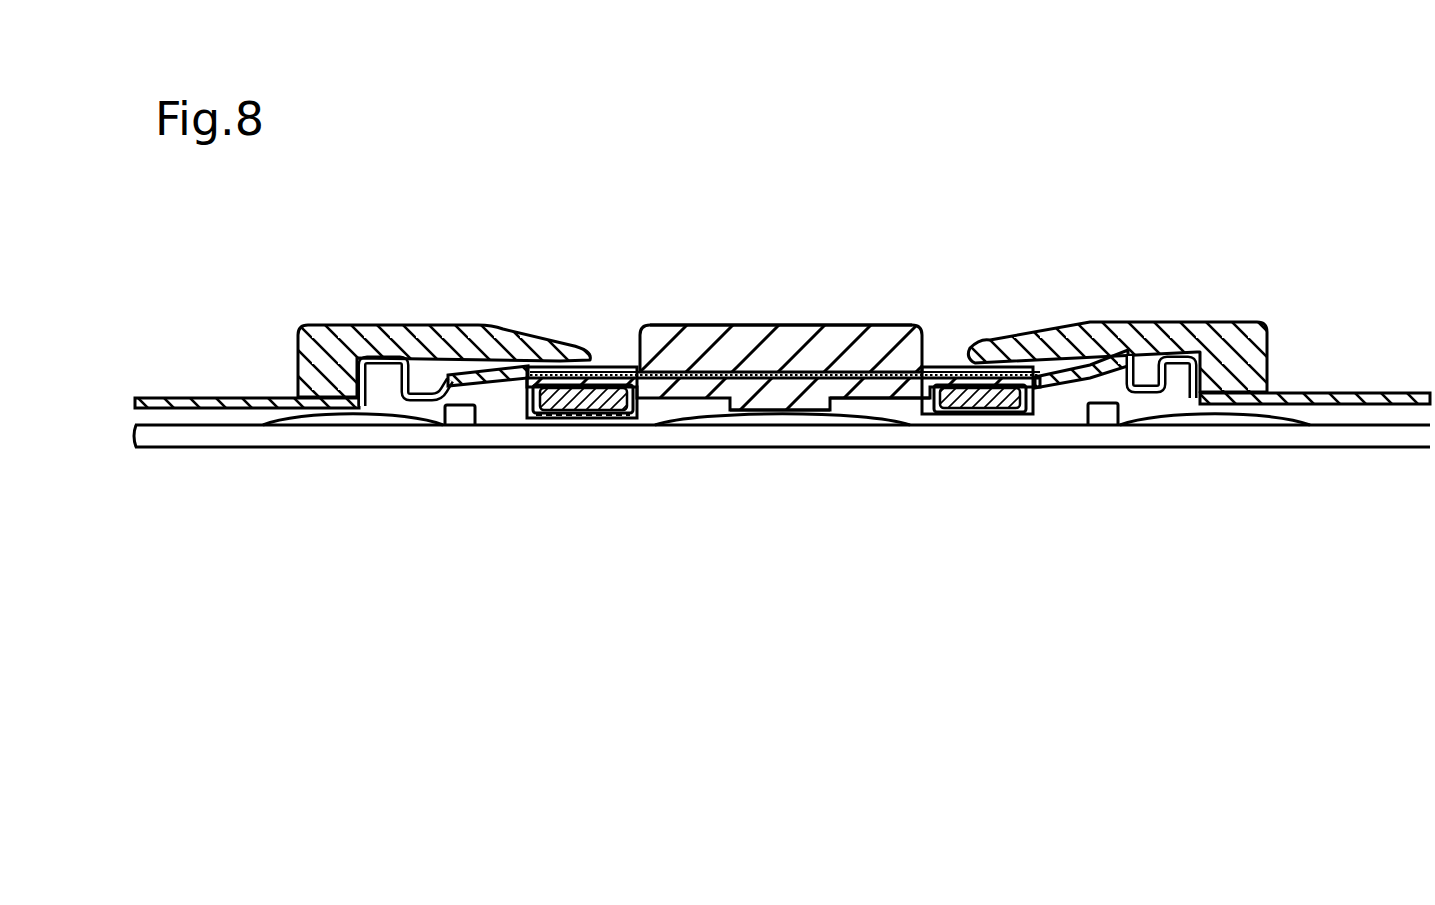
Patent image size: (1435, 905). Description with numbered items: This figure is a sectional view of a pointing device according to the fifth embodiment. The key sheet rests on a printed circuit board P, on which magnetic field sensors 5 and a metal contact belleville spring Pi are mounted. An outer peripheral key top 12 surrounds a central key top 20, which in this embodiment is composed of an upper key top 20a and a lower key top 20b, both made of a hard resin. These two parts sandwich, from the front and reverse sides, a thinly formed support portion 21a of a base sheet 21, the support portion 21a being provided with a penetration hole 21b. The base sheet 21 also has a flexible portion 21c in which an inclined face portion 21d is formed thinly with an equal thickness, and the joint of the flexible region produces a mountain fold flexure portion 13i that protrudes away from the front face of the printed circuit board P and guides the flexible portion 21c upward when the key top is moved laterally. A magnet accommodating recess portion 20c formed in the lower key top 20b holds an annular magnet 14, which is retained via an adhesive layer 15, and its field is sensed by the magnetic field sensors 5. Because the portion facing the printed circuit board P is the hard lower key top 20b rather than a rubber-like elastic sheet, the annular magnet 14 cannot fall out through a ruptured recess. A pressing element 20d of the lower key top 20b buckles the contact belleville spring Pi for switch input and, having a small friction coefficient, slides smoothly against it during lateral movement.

The magnetic field sensors 5 is at (1080, 425).
The outer peripheral key top 12 is at (1195, 323).
The mountain fold flexure portion 13i is at (1133, 352).
The annular magnet 14 is at (948, 400).
The adhesive layer 15 is at (668, 371).
The central key top 20 is at (865, 325).
The upper key top 20a is at (780, 325).
The lower key top 20b is at (885, 400).
The magnet accommodating recess portion 20c is at (1015, 400).
The pressing element 20d is at (777, 410).
The base sheet 21 is at (1322, 393).
The support portion 21a is at (597, 347).
The penetration hole 21b is at (905, 366).
The flexible portion 21c is at (486, 330).
The inclined face portion 21d is at (1052, 340).
The printed circuit board P is at (1326, 452).
The contact belleville spring Pi is at (662, 415).